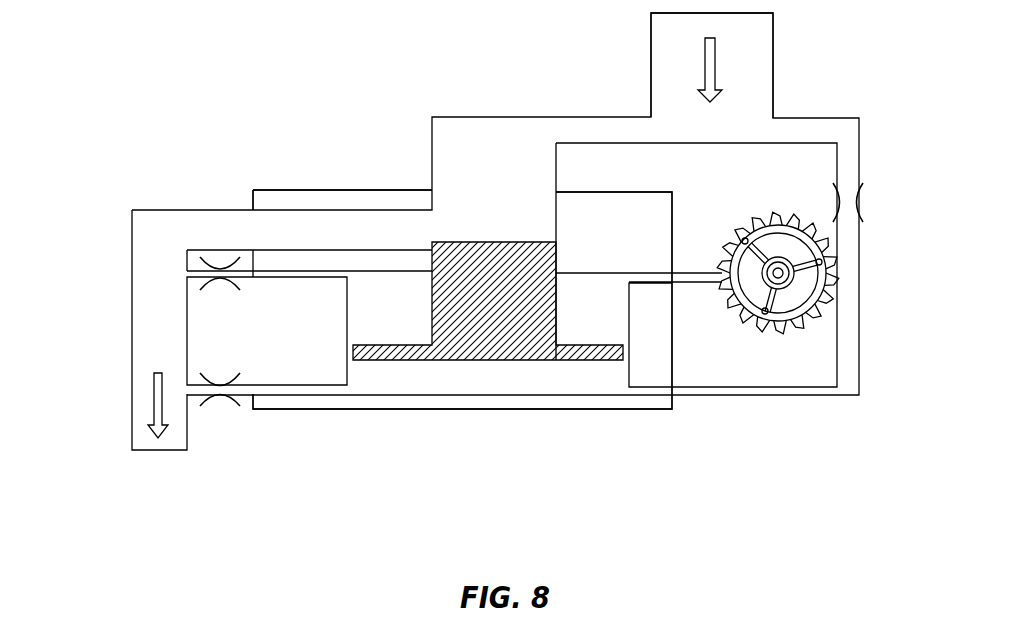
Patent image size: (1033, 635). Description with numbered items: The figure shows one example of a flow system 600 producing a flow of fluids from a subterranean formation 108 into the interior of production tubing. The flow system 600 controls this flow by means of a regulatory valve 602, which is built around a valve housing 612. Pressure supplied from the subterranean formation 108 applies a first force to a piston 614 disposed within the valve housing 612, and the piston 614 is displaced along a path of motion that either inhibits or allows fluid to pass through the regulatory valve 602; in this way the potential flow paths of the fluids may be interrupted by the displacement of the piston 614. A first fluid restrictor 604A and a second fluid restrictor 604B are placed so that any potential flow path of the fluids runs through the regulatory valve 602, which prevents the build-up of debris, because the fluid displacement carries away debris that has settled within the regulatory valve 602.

The flow system 600 is at (319, 61).
The subterranean formation 108 is at (540, 44).
The regulatory valve 602 is at (608, 418).
The first fluid restrictor 604A is at (220, 268).
The second fluid restrictor 604B is at (220, 385).
The valve housing 612 is at (300, 410).
The piston 614 is at (465, 361).